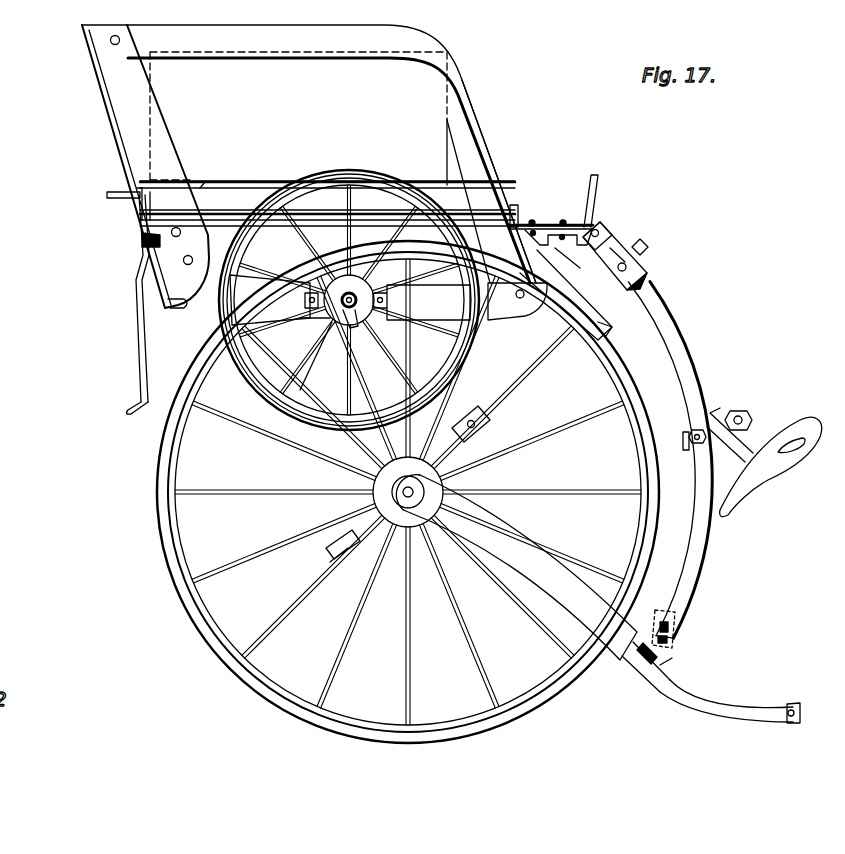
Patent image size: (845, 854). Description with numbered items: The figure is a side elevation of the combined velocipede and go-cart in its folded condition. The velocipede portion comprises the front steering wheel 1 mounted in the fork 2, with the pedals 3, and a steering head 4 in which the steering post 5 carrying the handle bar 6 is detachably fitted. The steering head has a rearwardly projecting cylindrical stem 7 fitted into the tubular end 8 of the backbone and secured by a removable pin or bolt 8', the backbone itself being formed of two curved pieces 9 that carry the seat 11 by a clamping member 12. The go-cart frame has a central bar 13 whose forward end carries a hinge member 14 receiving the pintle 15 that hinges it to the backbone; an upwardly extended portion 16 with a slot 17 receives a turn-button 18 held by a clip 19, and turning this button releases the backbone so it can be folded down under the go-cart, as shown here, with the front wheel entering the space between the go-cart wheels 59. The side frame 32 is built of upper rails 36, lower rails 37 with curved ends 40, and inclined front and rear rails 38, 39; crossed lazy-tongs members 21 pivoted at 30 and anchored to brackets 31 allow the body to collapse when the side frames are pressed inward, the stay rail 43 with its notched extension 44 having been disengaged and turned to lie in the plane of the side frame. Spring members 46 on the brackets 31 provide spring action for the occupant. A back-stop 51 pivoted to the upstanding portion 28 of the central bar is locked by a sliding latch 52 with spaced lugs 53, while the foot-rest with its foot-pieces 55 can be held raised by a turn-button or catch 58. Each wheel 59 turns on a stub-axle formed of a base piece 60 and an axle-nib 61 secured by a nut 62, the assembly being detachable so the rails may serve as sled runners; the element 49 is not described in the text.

The front steering wheel 1 is at (292, 650).
The fork 2 is at (530, 555).
The pedals 3 is at (492, 418).
The steering head 4 is at (640, 675).
The steering post 5 is at (735, 680).
The handle bar 6 is at (790, 704).
The cylindrical stem 7 is at (670, 650).
The tubular end of the backbone 8 is at (692, 618).
The removable pin or bolt 8' is at (697, 631).
The backbone pieces 9 is at (690, 366).
The seat 11 is at (776, 482).
The clamping member 12 is at (736, 409).
The central bar 13 is at (290, 226).
The hinge member 14 is at (603, 221).
The pintle 15 is at (622, 250).
The upwardly extended portion 16 is at (598, 182).
The slot 17 is at (582, 206).
The turn-button 18 is at (650, 246).
The clip 19 is at (648, 274).
The lazy-tongs members 21 is at (327, 206).
The upstanding portion 28 is at (137, 216).
The pivotal connection 30 is at (340, 172).
The brackets 31 is at (523, 210).
The side frame 32 is at (480, 98).
The upper rails 36 is at (298, 107).
The lower rails 37 is at (350, 300).
The front rails 38 is at (480, 152).
The rear rails 39 is at (148, 147).
The curved ends 40 is at (208, 180).
The stay rail 43 is at (160, 283).
The notched right-angled extension 44 is at (182, 308).
The spring members 46 is at (248, 182).
The seat rail 49 is at (425, 184).
The back-stop 51 is at (138, 352).
The sliding latch 52 is at (112, 192).
The spaced lugs 53 is at (142, 240).
The foot-pieces 55 is at (574, 322).
The turn-button or catch 58 is at (571, 262).
The wheels 59 is at (378, 174).
The base piece 60 is at (300, 320).
The axle-nib 61 is at (354, 330).
The nut 62 is at (330, 350).